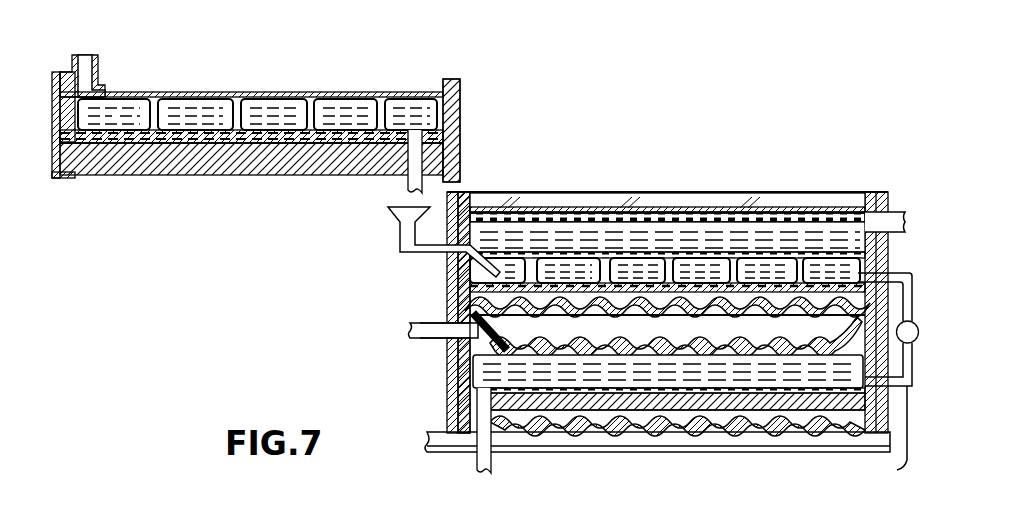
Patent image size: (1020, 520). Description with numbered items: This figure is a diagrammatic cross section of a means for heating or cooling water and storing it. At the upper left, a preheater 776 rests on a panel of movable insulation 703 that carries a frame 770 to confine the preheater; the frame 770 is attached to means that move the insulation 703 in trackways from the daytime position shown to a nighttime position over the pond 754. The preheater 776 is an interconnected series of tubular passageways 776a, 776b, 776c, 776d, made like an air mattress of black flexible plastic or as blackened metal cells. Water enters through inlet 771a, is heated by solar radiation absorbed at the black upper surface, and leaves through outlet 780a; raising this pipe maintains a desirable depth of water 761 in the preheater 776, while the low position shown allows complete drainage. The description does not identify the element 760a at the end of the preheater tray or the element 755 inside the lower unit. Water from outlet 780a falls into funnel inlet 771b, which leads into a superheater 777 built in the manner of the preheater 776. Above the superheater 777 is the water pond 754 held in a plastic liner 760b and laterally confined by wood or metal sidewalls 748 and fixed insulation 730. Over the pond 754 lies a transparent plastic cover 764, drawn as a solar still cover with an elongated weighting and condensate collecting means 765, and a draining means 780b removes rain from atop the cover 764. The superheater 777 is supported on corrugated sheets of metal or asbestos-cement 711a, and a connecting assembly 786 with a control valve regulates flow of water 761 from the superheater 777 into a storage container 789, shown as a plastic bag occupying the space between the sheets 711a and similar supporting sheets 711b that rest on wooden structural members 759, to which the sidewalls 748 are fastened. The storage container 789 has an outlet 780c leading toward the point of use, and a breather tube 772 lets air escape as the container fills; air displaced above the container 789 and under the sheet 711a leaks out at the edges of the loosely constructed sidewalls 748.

The panel of movable insulation 703 is at (160, 168).
The frame 770 is at (62, 178).
The inlet 771a is at (82, 55).
The preheater 776 is at (117, 94).
The tubular passageway 776a is at (177, 94).
The tubular passageway 776b is at (246, 94).
The tubular passageway 776c is at (318, 94).
The tubular passageway 776d is at (400, 94).
The end wall 760a is at (451, 79).
The water 761 is at (440, 118).
The outlet 780a is at (406, 185).
The plastic liner 760b is at (466, 193).
The sidewalls 748 is at (447, 270).
The liquid layer 755 is at (530, 240).
The pond 754 is at (588, 247).
The transparent plastic cover 764 is at (692, 222).
The weighting and condensate collecting means 765 is at (735, 208).
The draining means 780b is at (902, 212).
The funnel inlet 771b is at (392, 222).
The superheater 777 is at (470, 290).
The corrugated sheets 711a is at (465, 310).
The breather tube 772 is at (428, 340).
The fixed insulation 730 is at (463, 400).
The outlet 780c is at (478, 455).
The supporting sheets 711b is at (580, 432).
The storage container 789 is at (647, 433).
The wooden structural members 759 is at (763, 442).
The connecting assembly 786 is at (888, 378).